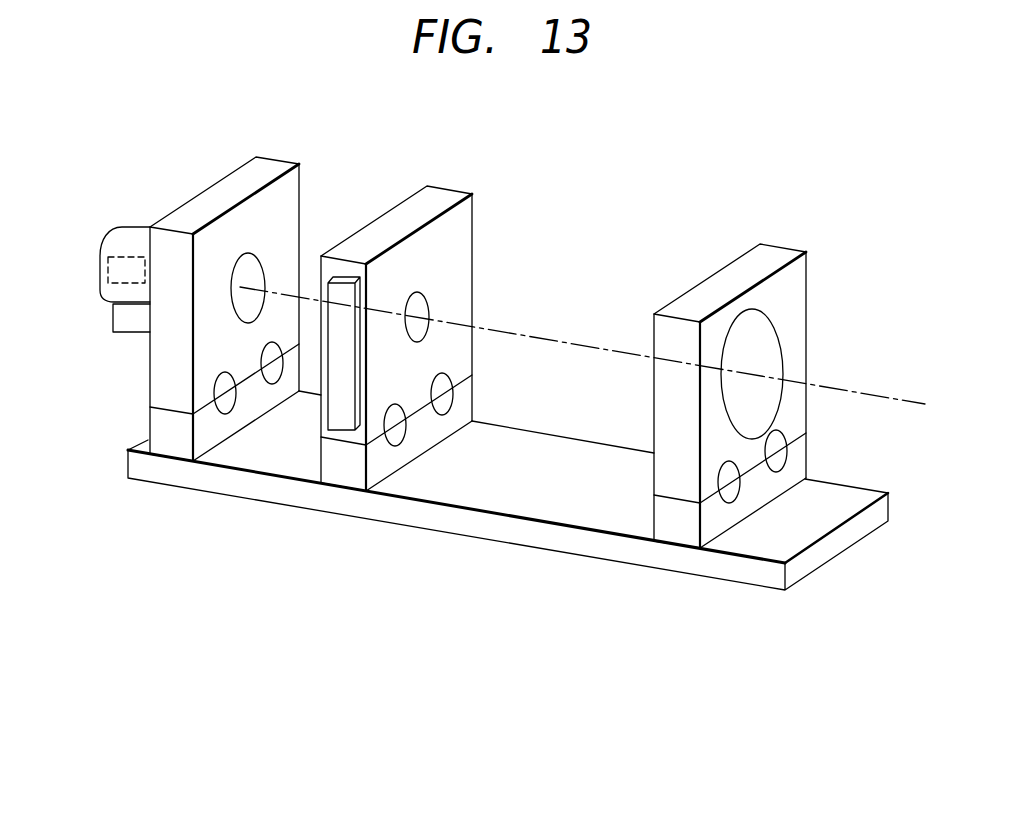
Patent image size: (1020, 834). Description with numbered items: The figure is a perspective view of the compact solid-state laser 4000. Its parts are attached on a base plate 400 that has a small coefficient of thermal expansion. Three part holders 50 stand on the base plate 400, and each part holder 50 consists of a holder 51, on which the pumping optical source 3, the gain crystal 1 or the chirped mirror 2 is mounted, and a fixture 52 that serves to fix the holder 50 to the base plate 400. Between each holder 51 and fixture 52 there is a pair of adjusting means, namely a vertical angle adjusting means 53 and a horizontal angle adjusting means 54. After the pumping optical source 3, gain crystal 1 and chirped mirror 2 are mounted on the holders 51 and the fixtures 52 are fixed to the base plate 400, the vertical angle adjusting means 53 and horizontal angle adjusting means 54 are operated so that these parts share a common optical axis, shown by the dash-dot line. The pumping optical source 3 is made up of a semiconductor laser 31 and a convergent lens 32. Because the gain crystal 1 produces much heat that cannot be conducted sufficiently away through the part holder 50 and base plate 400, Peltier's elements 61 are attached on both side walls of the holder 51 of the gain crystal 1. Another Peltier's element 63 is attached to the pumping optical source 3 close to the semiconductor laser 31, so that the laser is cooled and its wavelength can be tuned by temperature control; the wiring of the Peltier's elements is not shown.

The gain crystal 1 is at (433, 300).
The chirped mirror 2 is at (765, 342).
The pumping optical source 3 is at (103, 230).
The semiconductor laser 31 is at (116, 268).
The convergent lens 32 is at (253, 262).
The part holder 50 is at (471, 377).
The holder 51 is at (262, 172).
The fixture 52 is at (160, 427).
The vertical angle adjusting means 53 is at (275, 372).
The horizontal angle adjusting means 54 is at (222, 406).
The Peltier's element 61 is at (342, 293).
The Peltier's element 63 is at (134, 325).
The base plate 400 is at (525, 537).
The compact solid-state laser 4000 is at (441, 713).